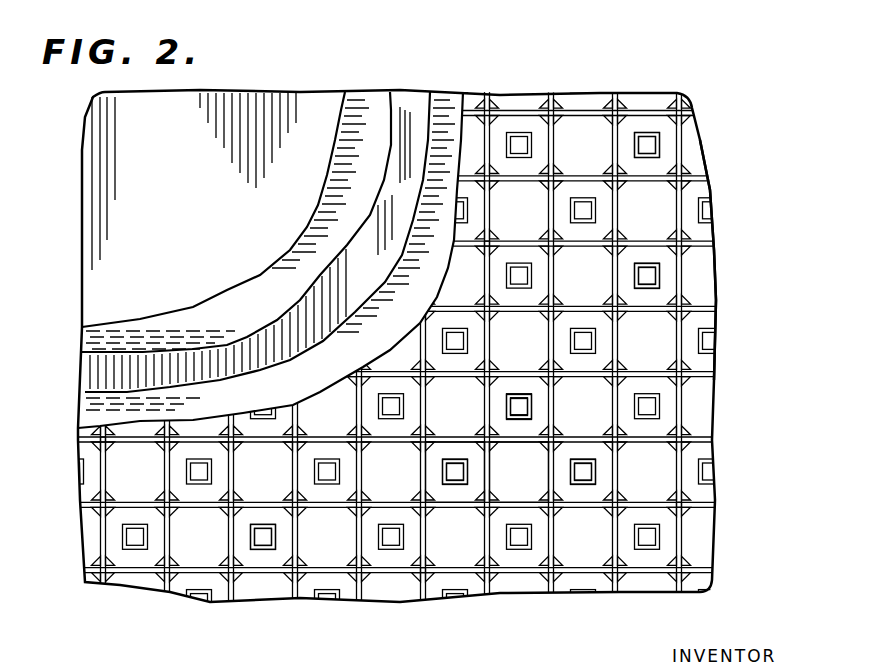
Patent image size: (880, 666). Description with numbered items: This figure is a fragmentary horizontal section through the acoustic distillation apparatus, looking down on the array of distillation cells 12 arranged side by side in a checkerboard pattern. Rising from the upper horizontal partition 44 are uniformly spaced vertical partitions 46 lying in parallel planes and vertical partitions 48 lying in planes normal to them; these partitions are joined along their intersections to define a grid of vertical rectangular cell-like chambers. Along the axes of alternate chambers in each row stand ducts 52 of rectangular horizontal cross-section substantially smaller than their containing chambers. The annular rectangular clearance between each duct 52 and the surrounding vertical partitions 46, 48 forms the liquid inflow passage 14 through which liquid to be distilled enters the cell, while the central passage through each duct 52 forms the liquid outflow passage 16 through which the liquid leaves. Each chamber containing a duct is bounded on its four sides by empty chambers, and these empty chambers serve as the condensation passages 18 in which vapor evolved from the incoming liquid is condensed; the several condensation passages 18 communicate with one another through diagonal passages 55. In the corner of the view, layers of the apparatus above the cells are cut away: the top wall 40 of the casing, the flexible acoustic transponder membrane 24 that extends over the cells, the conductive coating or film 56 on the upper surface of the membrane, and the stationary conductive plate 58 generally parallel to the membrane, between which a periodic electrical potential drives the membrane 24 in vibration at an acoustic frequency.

The distillation cell 12 is at (650, 130).
The liquid inflow passage 14 is at (692, 361).
The liquid outflow passage 16 is at (660, 283).
The condensation passage 18 is at (551, 441).
The acoustic transponder membrane 24 is at (438, 107).
The top wall 40 is at (300, 117).
The upper horizontal partition 44 is at (692, 276).
The vertical partitions 46 is at (682, 201).
The vertical partitions 48 is at (587, 112).
The duct 52 is at (663, 148).
The diagonal passages 55 is at (93, 435).
The conductive coating or film 56 is at (410, 107).
The conductive plate 58 is at (366, 110).